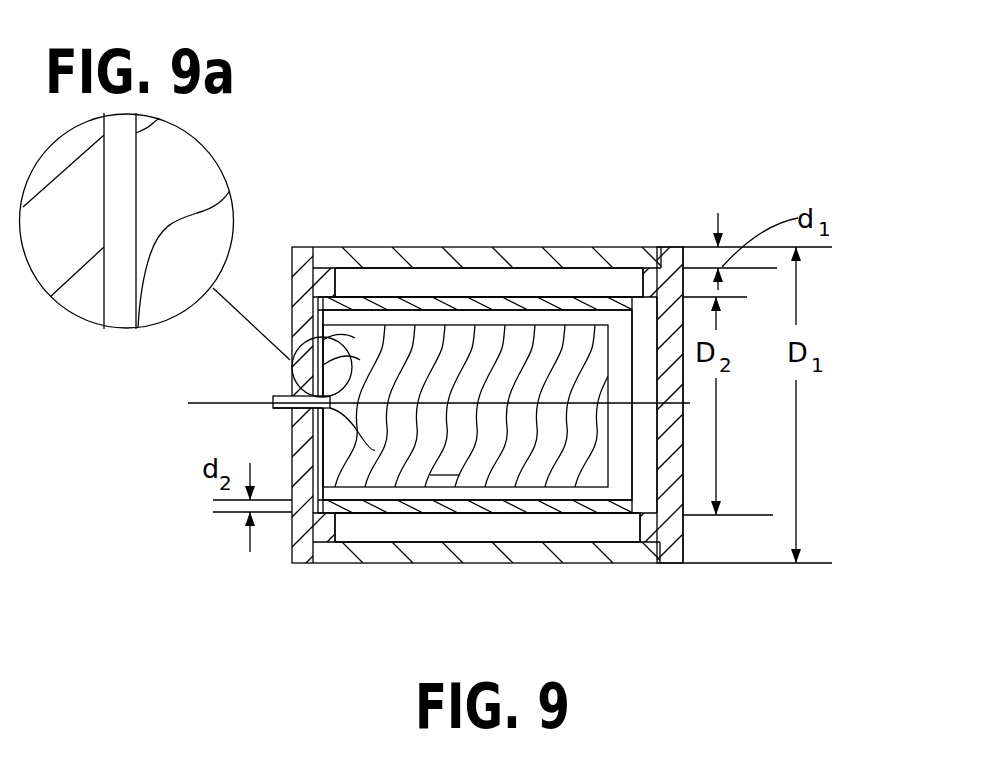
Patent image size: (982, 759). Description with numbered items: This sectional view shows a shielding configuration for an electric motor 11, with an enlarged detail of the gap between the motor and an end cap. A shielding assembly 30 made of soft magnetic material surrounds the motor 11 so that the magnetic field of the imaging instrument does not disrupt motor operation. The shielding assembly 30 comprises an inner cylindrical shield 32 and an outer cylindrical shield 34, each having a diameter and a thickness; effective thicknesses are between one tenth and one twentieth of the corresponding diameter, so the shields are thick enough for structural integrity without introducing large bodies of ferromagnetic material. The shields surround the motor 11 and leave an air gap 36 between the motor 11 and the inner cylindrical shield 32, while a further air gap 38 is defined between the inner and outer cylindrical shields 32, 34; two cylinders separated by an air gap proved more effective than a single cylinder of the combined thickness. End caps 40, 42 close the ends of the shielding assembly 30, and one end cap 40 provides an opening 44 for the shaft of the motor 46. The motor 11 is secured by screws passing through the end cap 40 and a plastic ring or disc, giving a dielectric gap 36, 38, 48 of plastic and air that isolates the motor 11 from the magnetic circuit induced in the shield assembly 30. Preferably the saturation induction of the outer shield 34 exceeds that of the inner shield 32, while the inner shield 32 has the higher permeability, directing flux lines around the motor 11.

In FIG. 9, the shielding assembly 30 is at (326, 236).
In FIG. 9, the outer cylindrical shield 34 is at (422, 250).
In FIG. 9, the inner cylindrical shield 32 is at (435, 507).
In FIG. 9, the air gap 36 is at (610, 493).
In FIG. 9, the further air gap 38 is at (612, 530).
In FIG. 9, the end cap 40 is at (292, 443).
In FIG. 9, the end cap 42 is at (683, 527).
In FIG. 9, the opening 44 is at (290, 397).
In FIG. 9, the shaft of the motor 46 is at (277, 398).
In FIG. 9a, the dielectric gap 48 is at (122, 300).
In FIG. 9, the electric motor 11 is at (474, 406).